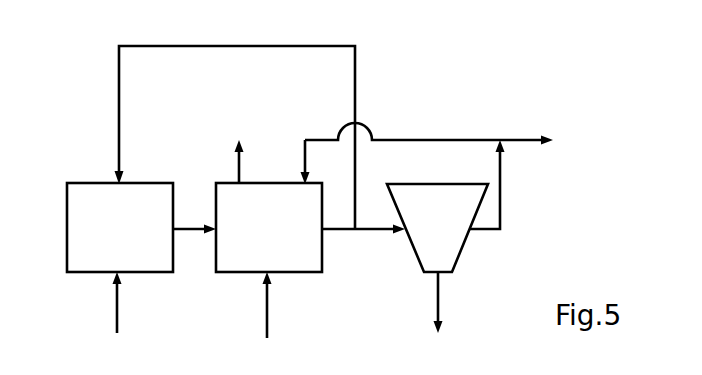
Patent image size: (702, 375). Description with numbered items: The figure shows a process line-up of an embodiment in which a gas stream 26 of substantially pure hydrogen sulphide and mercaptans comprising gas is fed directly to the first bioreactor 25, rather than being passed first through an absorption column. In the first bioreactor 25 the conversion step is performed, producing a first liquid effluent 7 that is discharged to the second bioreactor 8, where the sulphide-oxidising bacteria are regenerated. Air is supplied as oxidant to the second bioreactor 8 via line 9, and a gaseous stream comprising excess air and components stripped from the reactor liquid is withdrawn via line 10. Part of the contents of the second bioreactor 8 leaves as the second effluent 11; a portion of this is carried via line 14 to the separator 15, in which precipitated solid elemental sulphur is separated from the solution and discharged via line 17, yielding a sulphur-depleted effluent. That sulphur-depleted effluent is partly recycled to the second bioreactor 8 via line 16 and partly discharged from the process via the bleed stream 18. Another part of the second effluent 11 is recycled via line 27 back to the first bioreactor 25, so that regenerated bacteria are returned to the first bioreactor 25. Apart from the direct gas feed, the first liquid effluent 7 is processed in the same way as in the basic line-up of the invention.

The first bioreactor 25 is at (120, 227).
The second bioreactor 8 is at (269, 227).
The separator 15 is at (437, 228).
The recycle line 27 is at (245, 46).
The line 10 is at (235, 158).
The line 16 is at (438, 140).
The bleed stream 18 is at (512, 140).
The first liquid effluent line 7 is at (190, 231).
The gas stream 26 is at (110, 307).
The line 9 is at (268, 300).
The second effluent 11 is at (340, 232).
The line 14 is at (378, 232).
The line 17 is at (440, 305).